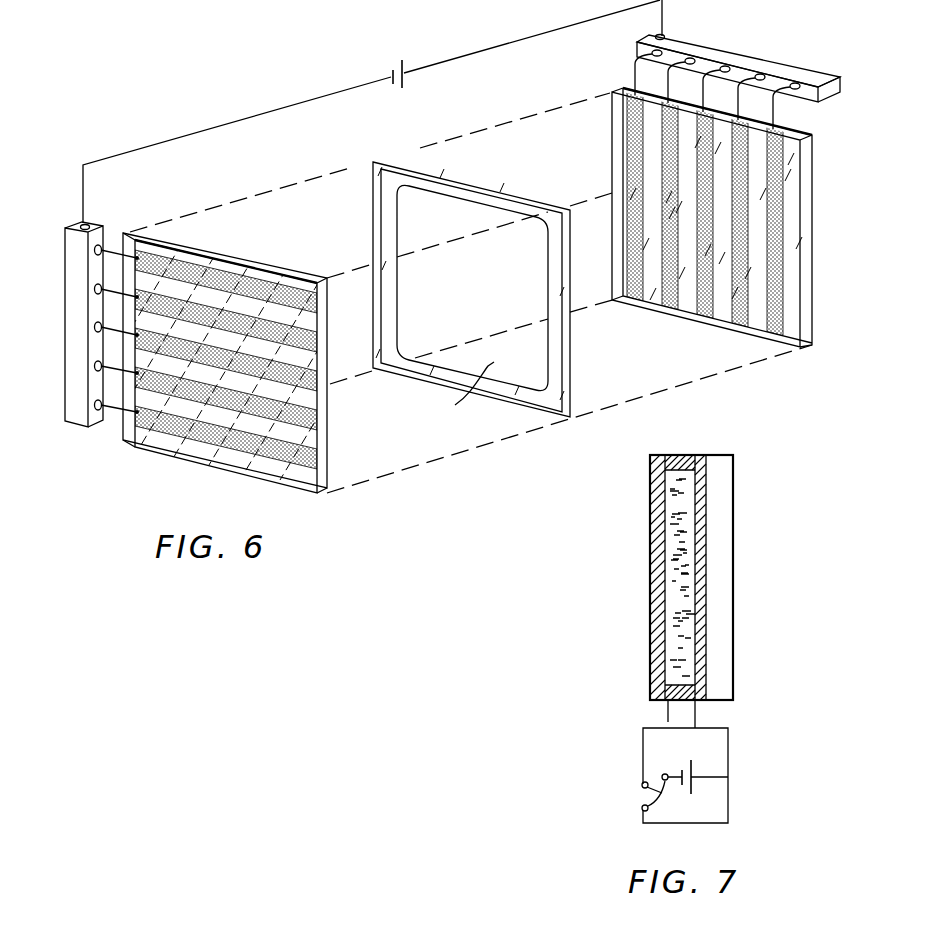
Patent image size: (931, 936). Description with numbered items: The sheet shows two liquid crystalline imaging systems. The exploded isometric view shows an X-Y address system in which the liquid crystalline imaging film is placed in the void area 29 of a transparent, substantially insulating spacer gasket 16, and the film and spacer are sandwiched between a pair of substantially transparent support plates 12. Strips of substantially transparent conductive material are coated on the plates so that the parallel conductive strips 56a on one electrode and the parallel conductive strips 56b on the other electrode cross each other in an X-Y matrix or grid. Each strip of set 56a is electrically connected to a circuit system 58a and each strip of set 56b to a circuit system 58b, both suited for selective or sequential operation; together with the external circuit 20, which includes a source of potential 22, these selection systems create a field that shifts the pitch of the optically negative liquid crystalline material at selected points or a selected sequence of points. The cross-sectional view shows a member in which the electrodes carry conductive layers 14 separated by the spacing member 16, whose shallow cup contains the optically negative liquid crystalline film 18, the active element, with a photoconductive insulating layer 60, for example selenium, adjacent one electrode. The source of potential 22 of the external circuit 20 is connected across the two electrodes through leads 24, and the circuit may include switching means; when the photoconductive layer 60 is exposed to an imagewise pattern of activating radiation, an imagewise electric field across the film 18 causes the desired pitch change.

In FIG. 6, the transparent support plate 12 is at (135, 234).
In FIG. 7, the transparent support plate 12 is at (722, 522).
In FIG. 7, the conductive coating 14 is at (659, 456).
In FIG. 6, the spacing member 16 is at (373, 163).
In FIG. 7, the spacing member 16 is at (687, 437).
In FIG. 7, the liquid crystalline film 18 is at (668, 595).
In FIG. 6, the external circuit 20 is at (414, 60).
In FIG. 7, the external circuit 20 is at (782, 748).
In FIG. 6, the source of potential 22 is at (396, 80).
In FIG. 7, the source of potential 22 is at (693, 785).
In FIG. 7, the leads 24 is at (668, 722).
In FIG. 6, the void area 29 is at (462, 390).
In FIG. 6, the conductive strips 56a is at (330, 378).
In FIG. 6, the conductive strips 56b is at (777, 337).
In FIG. 6, the circuit system 58a is at (77, 428).
In FIG. 6, the circuit system 58b is at (678, 47).
In FIG. 7, the photoconductive insulating layer 60 is at (700, 456).